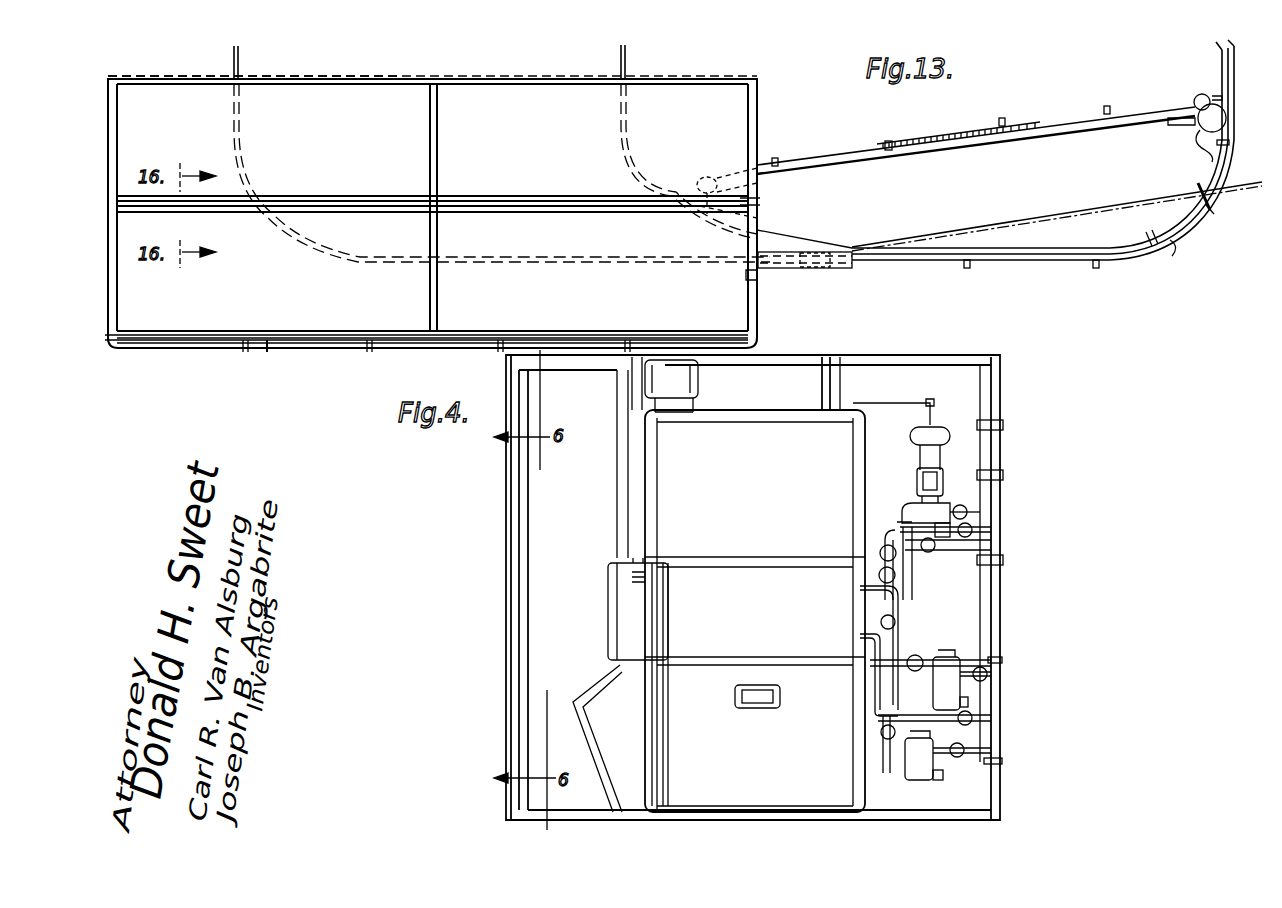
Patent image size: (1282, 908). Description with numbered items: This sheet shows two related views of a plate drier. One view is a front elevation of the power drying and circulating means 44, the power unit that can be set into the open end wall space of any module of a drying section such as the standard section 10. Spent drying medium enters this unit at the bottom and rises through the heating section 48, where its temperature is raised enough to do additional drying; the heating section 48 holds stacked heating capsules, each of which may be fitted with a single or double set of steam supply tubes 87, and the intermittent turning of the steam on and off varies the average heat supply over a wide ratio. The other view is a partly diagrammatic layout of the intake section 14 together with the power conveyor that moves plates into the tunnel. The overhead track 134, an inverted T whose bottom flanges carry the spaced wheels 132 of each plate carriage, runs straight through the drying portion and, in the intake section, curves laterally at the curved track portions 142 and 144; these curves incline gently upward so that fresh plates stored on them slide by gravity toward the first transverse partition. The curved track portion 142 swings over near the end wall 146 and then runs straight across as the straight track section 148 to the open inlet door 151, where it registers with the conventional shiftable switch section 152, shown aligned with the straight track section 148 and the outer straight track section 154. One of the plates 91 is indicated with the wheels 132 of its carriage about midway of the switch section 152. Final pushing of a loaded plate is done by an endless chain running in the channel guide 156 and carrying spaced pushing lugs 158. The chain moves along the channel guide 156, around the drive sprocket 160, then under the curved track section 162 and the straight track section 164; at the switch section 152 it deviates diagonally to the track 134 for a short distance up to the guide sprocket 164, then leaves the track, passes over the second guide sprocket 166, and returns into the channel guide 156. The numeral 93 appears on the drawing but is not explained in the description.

In FIG. 4, the standard section 10 is at (797, 393).
In FIG. 13, the intake section 14 is at (350, 332).
In FIG. 4, the power drying and circulating means 44 is at (788, 400).
In FIG. 4, the heating section 48 is at (719, 611).
In FIG. 4, the steam supply tubes 87 is at (862, 588).
In FIG. 13, the plates 91 is at (1012, 220).
In FIG. 13, the top rail 93 is at (149, 76).
In FIG. 13, the wheels 132 is at (817, 272).
In FIG. 13, the track 134 is at (240, 73).
In FIG. 13, the curved track portion 142 is at (265, 192).
In FIG. 13, the curved track portion 144 is at (652, 172).
In FIG. 13, the end wall 146 is at (270, 350).
In FIG. 13, the straight track section 148 is at (523, 264).
In FIG. 13, the open inlet door 151 is at (748, 276).
In FIG. 13, the shiftable switch section 152 is at (790, 270).
In FIG. 13, the outer straight track section 154 is at (941, 262).
In FIG. 13, the channel guide 156 is at (972, 142).
In FIG. 13, the pushing lugs 158 is at (891, 146).
In FIG. 13, the drive sprocket 160 is at (1198, 131).
In FIG. 13, the curved track section 162 is at (1174, 242).
In FIG. 13, the guide sprocket 164 is at (761, 207).
In FIG. 13, the second guide sprocket 166 is at (747, 193).